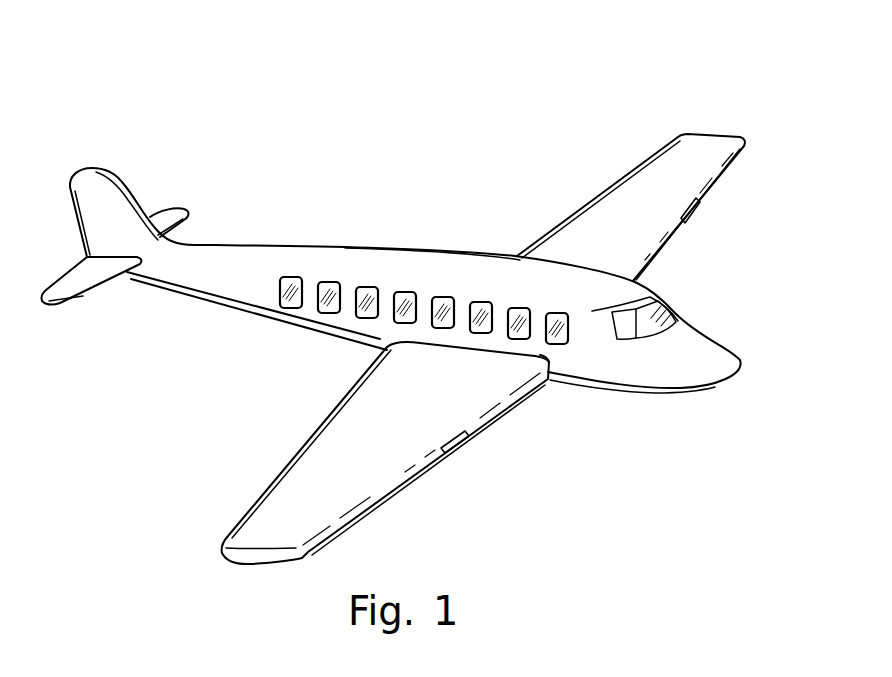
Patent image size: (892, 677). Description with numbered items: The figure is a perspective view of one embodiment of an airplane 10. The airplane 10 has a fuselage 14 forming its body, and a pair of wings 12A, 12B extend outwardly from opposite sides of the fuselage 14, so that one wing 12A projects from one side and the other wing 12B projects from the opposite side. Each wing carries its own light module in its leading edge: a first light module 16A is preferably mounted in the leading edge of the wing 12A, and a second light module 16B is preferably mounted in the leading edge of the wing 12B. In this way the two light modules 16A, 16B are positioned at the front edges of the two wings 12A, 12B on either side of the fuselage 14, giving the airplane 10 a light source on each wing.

The airplane 10 is at (379, 85).
The wing 12A is at (318, 430).
The wing 12B is at (587, 201).
The fuselage 14 is at (381, 243).
The first light module 16A is at (457, 450).
The second light module 16B is at (700, 216).